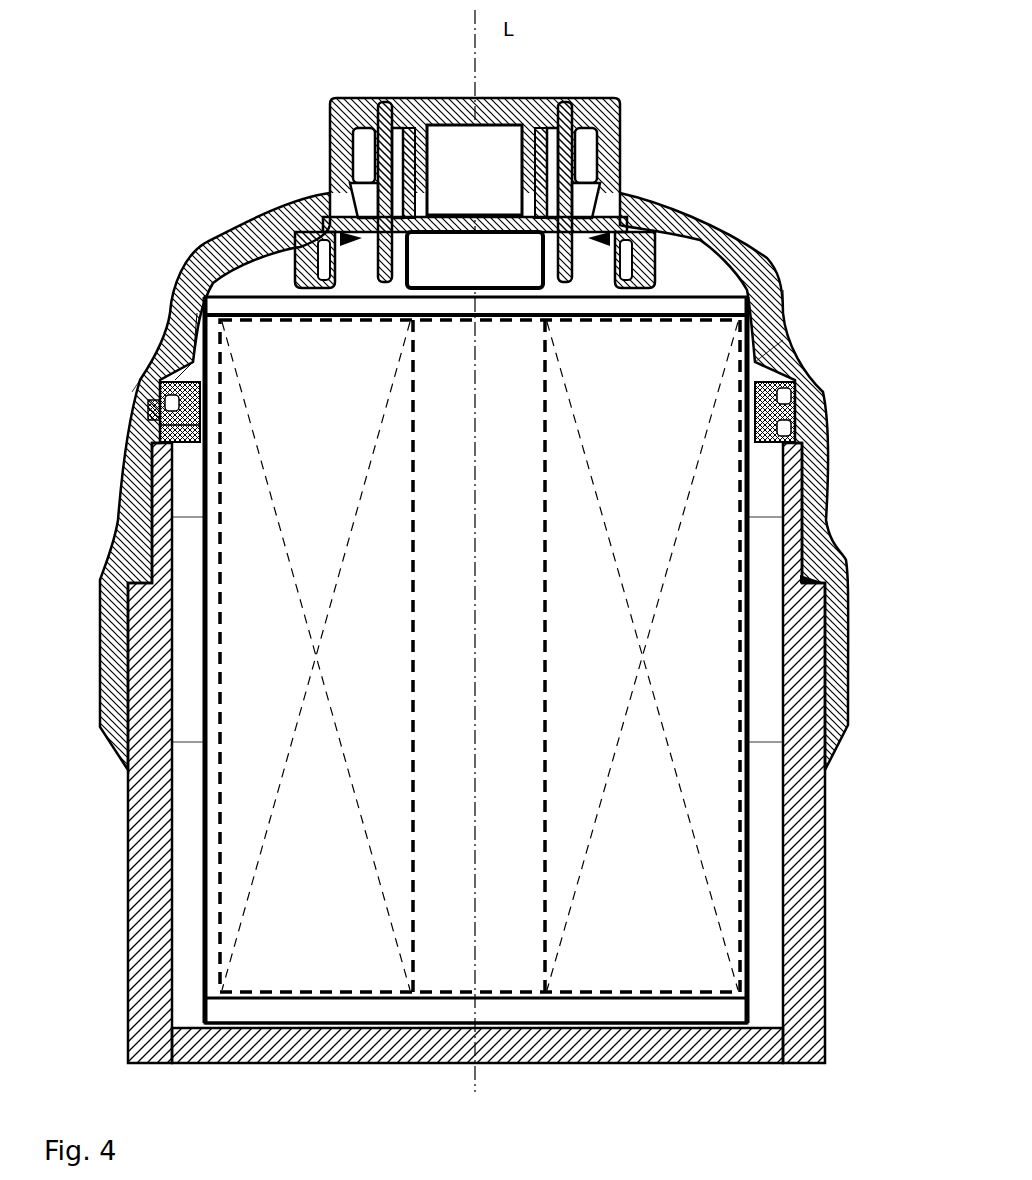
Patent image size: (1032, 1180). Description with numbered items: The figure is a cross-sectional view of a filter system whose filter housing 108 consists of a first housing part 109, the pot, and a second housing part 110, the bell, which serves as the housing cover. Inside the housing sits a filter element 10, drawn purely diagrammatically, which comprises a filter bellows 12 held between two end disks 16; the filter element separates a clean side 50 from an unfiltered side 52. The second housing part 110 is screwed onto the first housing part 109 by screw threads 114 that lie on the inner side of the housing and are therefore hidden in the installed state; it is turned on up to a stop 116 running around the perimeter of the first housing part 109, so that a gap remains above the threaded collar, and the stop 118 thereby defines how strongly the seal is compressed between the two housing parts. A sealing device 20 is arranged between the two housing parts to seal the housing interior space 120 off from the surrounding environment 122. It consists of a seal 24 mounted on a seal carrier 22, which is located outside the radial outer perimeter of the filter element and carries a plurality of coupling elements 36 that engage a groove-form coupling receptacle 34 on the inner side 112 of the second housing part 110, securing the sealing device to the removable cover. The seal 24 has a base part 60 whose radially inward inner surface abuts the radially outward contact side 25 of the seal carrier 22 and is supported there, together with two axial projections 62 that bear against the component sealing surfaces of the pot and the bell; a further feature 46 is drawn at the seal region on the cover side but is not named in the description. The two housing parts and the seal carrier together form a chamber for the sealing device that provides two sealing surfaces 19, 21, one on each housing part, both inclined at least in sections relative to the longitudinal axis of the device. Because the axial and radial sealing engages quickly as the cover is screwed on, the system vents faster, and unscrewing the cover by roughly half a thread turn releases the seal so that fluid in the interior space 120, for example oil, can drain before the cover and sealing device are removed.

The filter housing 108 is at (800, 90).
The second housing part 110 is at (782, 265).
The first housing part 109 is at (825, 870).
The inner side 112 is at (284, 295).
The clean side 50 is at (698, 290).
The seal carrier 22 is at (196, 372).
The coupling receptacle 34 is at (186, 398).
The contact side 25 is at (172, 402).
The sealing surface 19 is at (138, 388).
The sealing device 20 is at (134, 392).
The seal 24 is at (152, 410).
The sealing surface 21 is at (155, 440).
The housing interior space 120 is at (152, 478).
The unfiltered side 52 is at (150, 520).
The surrounding environment 122 is at (86, 625).
The end disk 16 is at (760, 300).
The coupling element 36 is at (776, 362).
The axial projection 62 is at (792, 388).
The base part 60 is at (782, 417).
The support edge 46 is at (800, 452).
The stop 118 is at (808, 572).
The screw threads 114 is at (840, 668).
The stop 116 is at (838, 740).
The filter bellows 12 is at (318, 873).
The filter element 10 is at (515, 990).